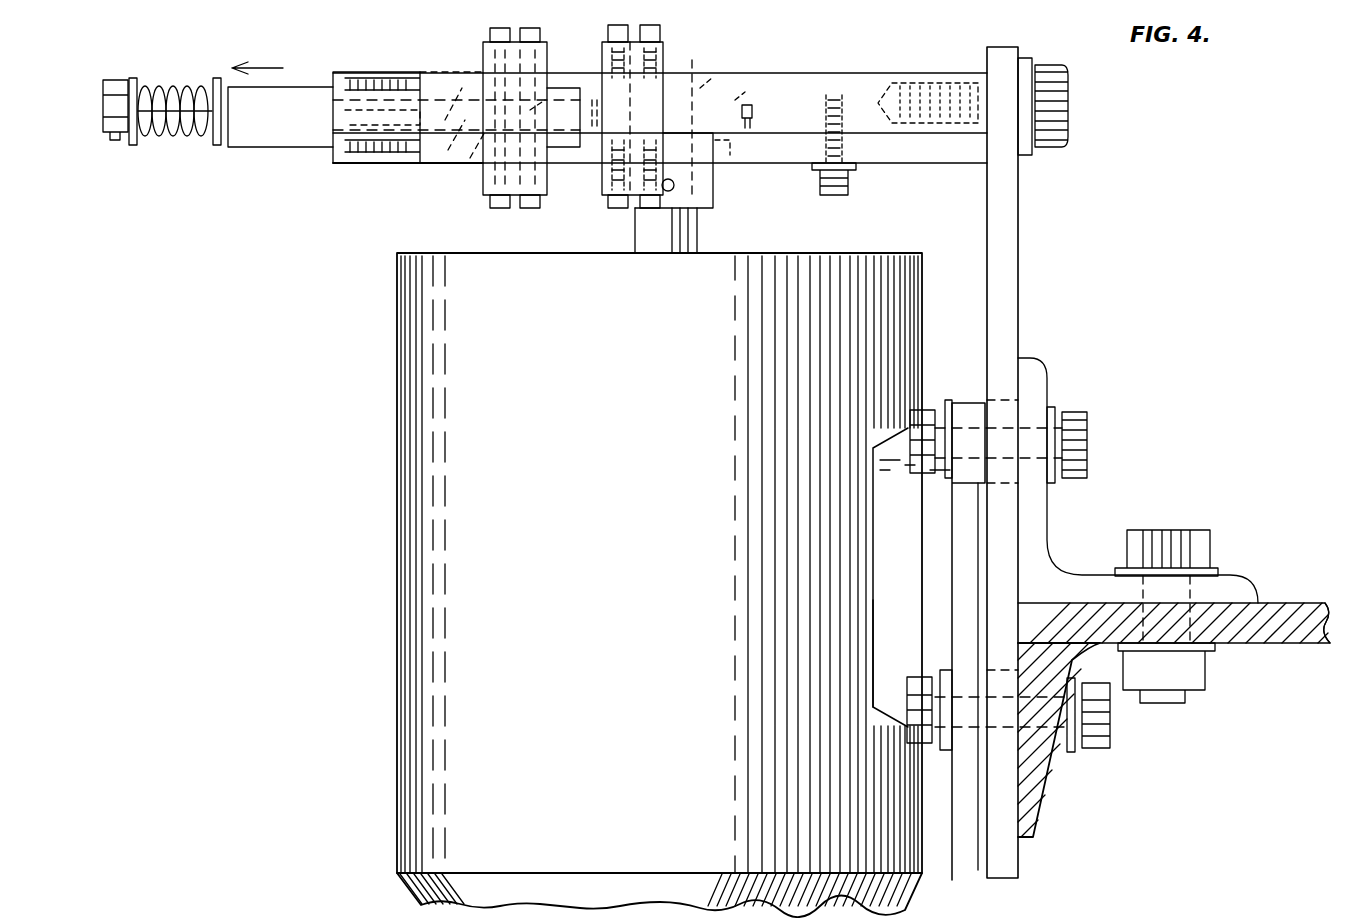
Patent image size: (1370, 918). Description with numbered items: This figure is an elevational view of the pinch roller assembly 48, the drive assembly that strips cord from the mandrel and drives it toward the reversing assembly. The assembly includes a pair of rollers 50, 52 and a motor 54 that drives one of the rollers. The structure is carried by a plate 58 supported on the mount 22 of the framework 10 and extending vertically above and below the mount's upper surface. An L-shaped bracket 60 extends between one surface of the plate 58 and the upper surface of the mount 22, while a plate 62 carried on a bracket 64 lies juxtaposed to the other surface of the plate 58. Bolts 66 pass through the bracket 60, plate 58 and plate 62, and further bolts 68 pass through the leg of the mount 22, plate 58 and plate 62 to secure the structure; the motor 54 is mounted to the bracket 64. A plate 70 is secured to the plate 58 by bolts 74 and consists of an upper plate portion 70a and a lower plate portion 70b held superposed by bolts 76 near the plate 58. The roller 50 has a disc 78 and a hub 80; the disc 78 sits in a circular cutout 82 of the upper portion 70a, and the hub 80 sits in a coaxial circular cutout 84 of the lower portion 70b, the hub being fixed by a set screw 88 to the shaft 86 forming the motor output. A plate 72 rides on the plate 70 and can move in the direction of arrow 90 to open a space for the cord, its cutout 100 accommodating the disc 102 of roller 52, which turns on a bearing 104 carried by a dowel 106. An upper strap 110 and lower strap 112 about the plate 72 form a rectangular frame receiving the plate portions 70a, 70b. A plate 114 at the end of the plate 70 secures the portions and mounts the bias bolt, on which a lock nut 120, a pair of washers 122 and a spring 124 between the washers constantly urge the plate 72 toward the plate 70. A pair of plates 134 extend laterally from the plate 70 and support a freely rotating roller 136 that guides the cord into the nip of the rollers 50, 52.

The framework 10 is at (1306, 618).
The mount 22 is at (1268, 608).
The pinch roller assembly 48 is at (404, 208).
The roller 50 is at (711, 108).
The roller 52 is at (548, 103).
The motor 54 is at (410, 466).
The plate 58 is at (1010, 262).
The bracket 60 is at (1040, 540).
The plate 62 is at (950, 554).
The bracket 64 is at (880, 626).
The bolts 66 is at (1082, 410).
The bolts 68 is at (1100, 748).
The plate 70 is at (834, 66).
The upper plate portion 70a is at (430, 72).
The lower plate portion 70b is at (447, 163).
The plate 72 is at (305, 148).
The bolts 74 is at (1060, 108).
The bolts 76 is at (822, 180).
The disc 78 is at (735, 105).
The hub 80 is at (713, 188).
The circular cutout 82 is at (756, 118).
The circular cutout 84 is at (730, 150).
The shaft 86 is at (680, 238).
The set screw 88 is at (674, 208).
The arrow 90 is at (263, 68).
The cutout 100 is at (425, 140).
The disc 102 is at (450, 90).
The bearing 104 is at (486, 150).
The dowel 106 is at (517, 195).
The upper strap 110 is at (540, 42).
The lower strap 112 is at (490, 200).
The plate 114 is at (362, 72).
The lock nut 120 is at (128, 140).
The washers 122 is at (133, 78).
The spring 124 is at (182, 136).
The plates 134 is at (603, 45).
The roller 136 is at (662, 90).